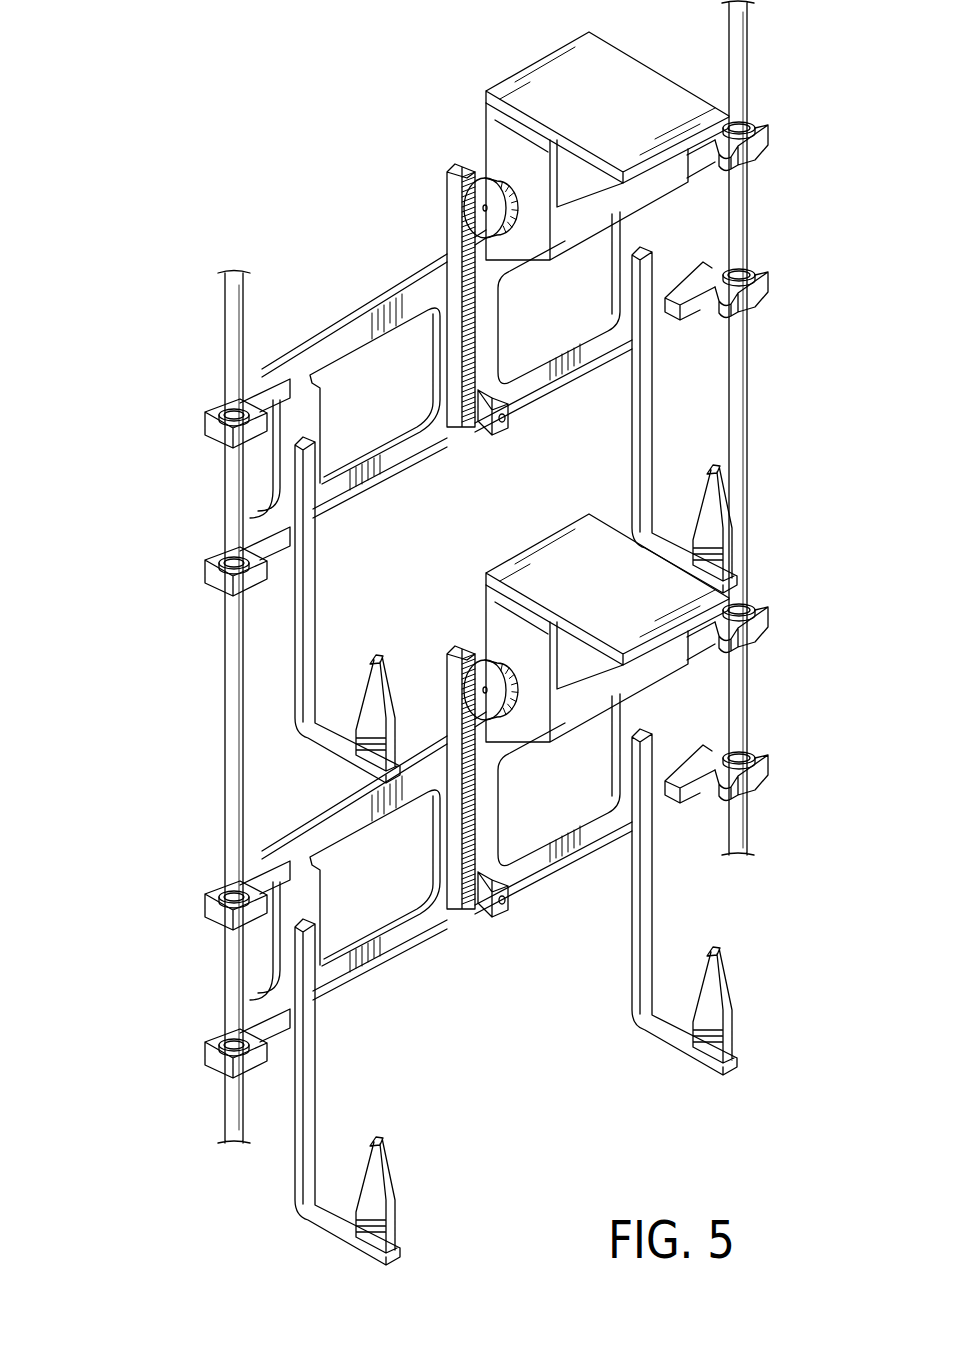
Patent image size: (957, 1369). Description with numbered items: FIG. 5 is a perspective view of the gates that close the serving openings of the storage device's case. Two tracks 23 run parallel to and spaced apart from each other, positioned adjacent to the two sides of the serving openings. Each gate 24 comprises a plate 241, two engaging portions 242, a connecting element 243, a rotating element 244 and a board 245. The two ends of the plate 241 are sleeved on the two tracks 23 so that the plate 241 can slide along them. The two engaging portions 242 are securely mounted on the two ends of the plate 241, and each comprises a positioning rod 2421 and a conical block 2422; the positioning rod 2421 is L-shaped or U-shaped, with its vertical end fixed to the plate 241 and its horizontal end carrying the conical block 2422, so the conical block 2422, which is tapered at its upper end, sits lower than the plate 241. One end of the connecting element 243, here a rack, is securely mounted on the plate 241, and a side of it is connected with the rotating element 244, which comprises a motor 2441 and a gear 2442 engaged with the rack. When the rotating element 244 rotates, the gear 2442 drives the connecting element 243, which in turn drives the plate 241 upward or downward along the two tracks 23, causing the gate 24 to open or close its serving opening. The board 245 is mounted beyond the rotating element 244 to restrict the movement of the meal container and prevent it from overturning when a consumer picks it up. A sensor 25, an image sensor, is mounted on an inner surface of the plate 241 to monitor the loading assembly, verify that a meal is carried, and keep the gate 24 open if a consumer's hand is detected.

The track 23 is at (748, 58).
The gate 24 is at (199, 720).
The sensor 25 is at (510, 903).
The plate 241 is at (408, 953).
The engaging portion 242 is at (688, 923).
The positioning rod 2421 is at (648, 881).
The conical block 2422 is at (713, 1020).
The connecting element 243 is at (488, 920).
The rotating element 244 is at (548, 775).
The motor 2441 is at (592, 666).
The gear 2442 is at (483, 673).
The board 245 is at (673, 579).